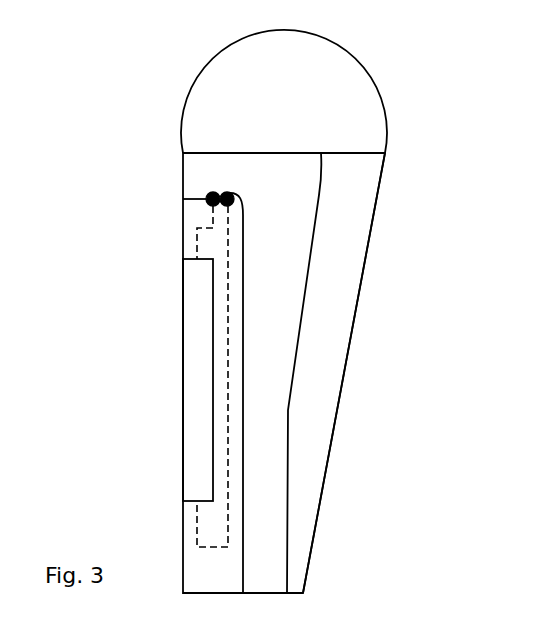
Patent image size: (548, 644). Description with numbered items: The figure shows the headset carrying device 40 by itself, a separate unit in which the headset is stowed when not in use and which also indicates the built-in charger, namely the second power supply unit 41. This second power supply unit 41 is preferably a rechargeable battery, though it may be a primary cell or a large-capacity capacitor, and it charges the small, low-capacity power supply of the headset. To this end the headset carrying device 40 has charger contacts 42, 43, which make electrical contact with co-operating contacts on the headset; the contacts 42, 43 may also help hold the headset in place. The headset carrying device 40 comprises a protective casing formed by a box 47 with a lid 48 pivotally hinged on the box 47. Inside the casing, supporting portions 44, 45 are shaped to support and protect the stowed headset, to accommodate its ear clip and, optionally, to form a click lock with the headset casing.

The headset carrying device 40 is at (137, 107).
The second power supply unit 41 is at (197, 382).
The charger contact 42 is at (213, 186).
The charger contact 43 is at (225, 188).
The supporting portion 44 is at (246, 232).
The supporting portion 45 is at (288, 412).
The box 47 is at (367, 248).
The lid 48 is at (320, 47).